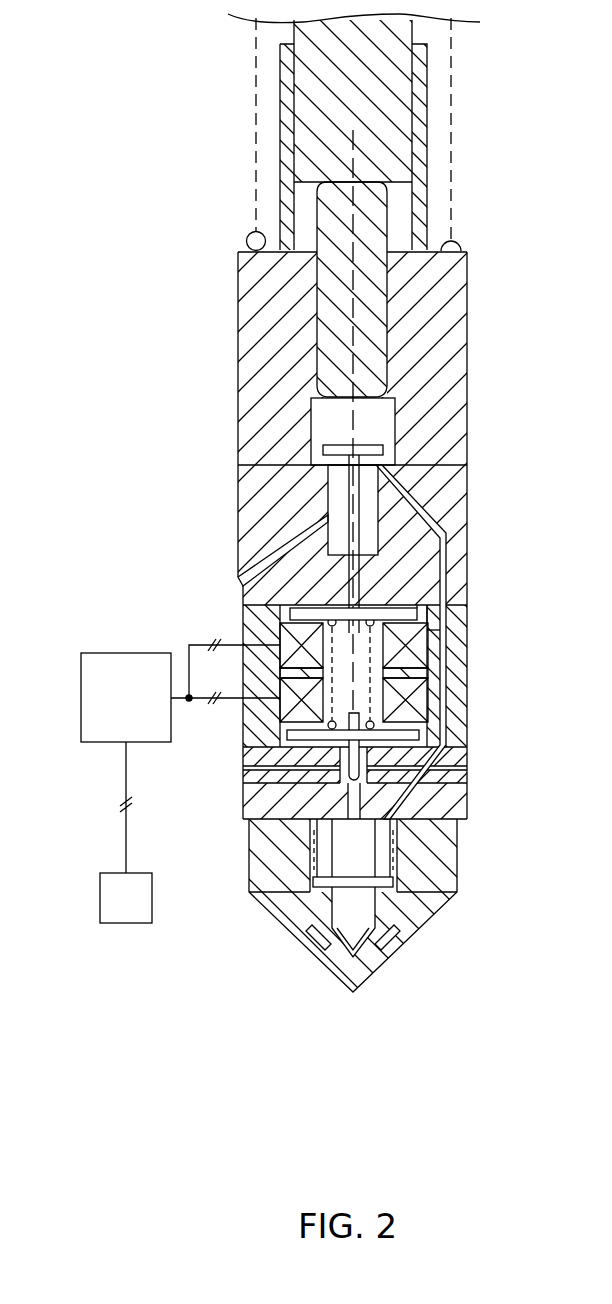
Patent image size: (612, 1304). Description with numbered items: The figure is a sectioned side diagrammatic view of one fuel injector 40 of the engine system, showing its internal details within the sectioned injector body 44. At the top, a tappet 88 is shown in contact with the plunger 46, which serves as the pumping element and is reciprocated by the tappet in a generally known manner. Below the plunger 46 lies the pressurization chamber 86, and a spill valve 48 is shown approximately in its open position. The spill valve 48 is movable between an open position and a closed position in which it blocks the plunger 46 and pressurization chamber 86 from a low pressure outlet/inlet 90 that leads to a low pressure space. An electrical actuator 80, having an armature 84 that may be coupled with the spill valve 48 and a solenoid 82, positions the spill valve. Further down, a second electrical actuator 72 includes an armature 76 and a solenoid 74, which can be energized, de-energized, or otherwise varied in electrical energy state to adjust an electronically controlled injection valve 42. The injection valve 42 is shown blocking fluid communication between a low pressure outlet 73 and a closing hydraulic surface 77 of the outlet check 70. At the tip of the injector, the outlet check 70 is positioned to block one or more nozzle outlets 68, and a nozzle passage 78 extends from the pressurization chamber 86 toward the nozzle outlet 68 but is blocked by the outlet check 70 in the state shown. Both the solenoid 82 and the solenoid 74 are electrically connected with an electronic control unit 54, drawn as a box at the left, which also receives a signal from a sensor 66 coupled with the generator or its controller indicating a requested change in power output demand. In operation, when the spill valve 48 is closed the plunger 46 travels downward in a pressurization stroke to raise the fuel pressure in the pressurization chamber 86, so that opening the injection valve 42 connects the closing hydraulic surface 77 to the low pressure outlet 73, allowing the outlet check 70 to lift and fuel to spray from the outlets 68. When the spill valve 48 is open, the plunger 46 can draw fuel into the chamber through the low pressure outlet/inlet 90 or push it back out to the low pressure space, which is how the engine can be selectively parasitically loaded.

The fuel injector 40 is at (533, 484).
The electronically controlled injection valve 42 is at (357, 779).
The injector body 44 is at (473, 386).
The plunger 46 is at (387, 216).
The spill valve 48 is at (372, 541).
The electronic control unit 54 is at (80, 660).
The sensor 66 is at (100, 880).
The nozzle outlet 68 is at (392, 957).
The outlet check 70 is at (377, 900).
The electrical actuator 72 is at (272, 735).
The low pressure outlet 73 is at (243, 769).
The solenoid 74 is at (432, 693).
The armature 76 is at (420, 733).
The closing hydraulic surface 77 is at (364, 819).
The nozzle passage 78 is at (445, 523).
The electrical actuator 80 is at (272, 634).
The solenoid 82 is at (432, 640).
The armature 84 is at (440, 612).
The pressurization chamber 86 is at (320, 417).
The tappet 88 is at (420, 94).
The low pressure outlet/inlet 90 is at (238, 577).